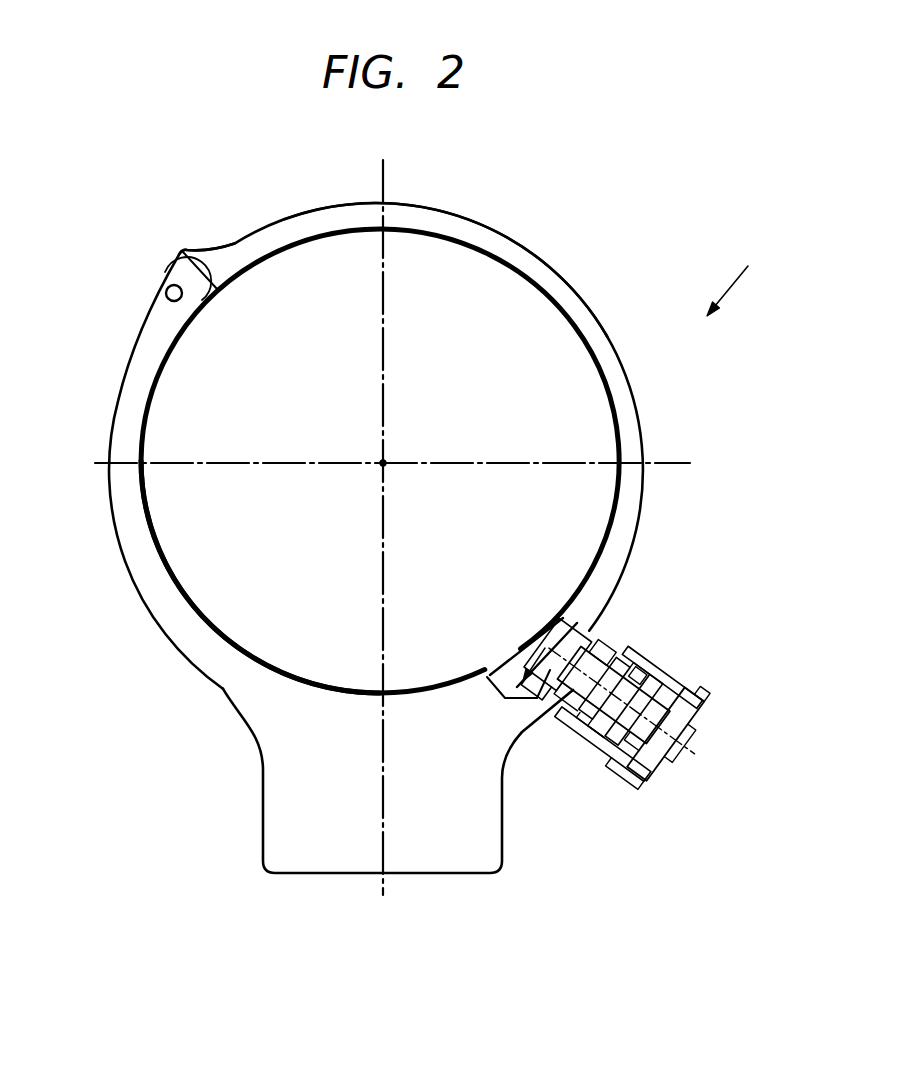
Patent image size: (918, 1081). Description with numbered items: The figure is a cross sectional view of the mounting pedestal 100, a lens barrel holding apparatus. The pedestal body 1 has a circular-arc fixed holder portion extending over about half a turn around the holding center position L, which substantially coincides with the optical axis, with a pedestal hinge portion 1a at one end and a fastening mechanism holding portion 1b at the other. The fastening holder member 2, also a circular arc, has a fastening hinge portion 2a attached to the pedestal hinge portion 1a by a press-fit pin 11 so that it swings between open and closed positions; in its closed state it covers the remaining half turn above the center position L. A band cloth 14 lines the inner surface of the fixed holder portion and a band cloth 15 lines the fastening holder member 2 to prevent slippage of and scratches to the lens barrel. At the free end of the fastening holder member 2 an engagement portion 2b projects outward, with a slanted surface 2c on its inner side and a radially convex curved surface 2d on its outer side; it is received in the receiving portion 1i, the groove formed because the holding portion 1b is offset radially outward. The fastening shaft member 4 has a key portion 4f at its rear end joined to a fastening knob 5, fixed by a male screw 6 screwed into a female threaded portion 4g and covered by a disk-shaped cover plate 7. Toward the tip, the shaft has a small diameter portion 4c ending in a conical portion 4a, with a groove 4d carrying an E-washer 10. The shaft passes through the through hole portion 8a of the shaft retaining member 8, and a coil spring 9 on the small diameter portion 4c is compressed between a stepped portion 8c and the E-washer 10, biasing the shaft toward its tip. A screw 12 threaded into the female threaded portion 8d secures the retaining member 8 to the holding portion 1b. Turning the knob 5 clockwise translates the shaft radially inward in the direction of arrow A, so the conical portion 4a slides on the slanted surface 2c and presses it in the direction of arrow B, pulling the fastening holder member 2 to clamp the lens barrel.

The pedestal body 1 is at (262, 828).
The pedestal hinge portion 1a is at (188, 303).
The fastening mechanism holding portion 1b is at (637, 658).
The receiving portion 1i is at (500, 680).
The fastening holder member 2 is at (508, 235).
The fastening hinge portion 2a is at (180, 252).
The engagement portion 2b is at (512, 660).
The slanted surface 2c is at (548, 663).
The curved surface 2d is at (543, 702).
The fastening shaft member 4 is at (607, 732).
The conical portion 4a is at (562, 617).
The small diameter portion 4c is at (570, 722).
The groove 4d is at (605, 612).
The key portion 4f is at (700, 723).
The female threaded portion 4g is at (628, 752).
The fastening knob 5 is at (698, 697).
The male screw 6 is at (641, 778).
The cover plate 7 is at (686, 730).
The shaft retaining member 8 is at (672, 687).
The through hole portion 8a is at (683, 703).
The stepped portion 8c is at (588, 732).
The female threaded portion 8d is at (593, 762).
The coil spring 9 is at (623, 648).
The E-washer 10 is at (612, 635).
The press-fit pin 11 is at (166, 291).
The screw 12 is at (650, 677).
The band cloth 14 is at (243, 651).
The band cloth 15 is at (537, 285).
The mounting pedestal 100 is at (747, 277).
The center position L is at (383, 463).
The arrow A is at (555, 746).
The arrow B is at (515, 700).